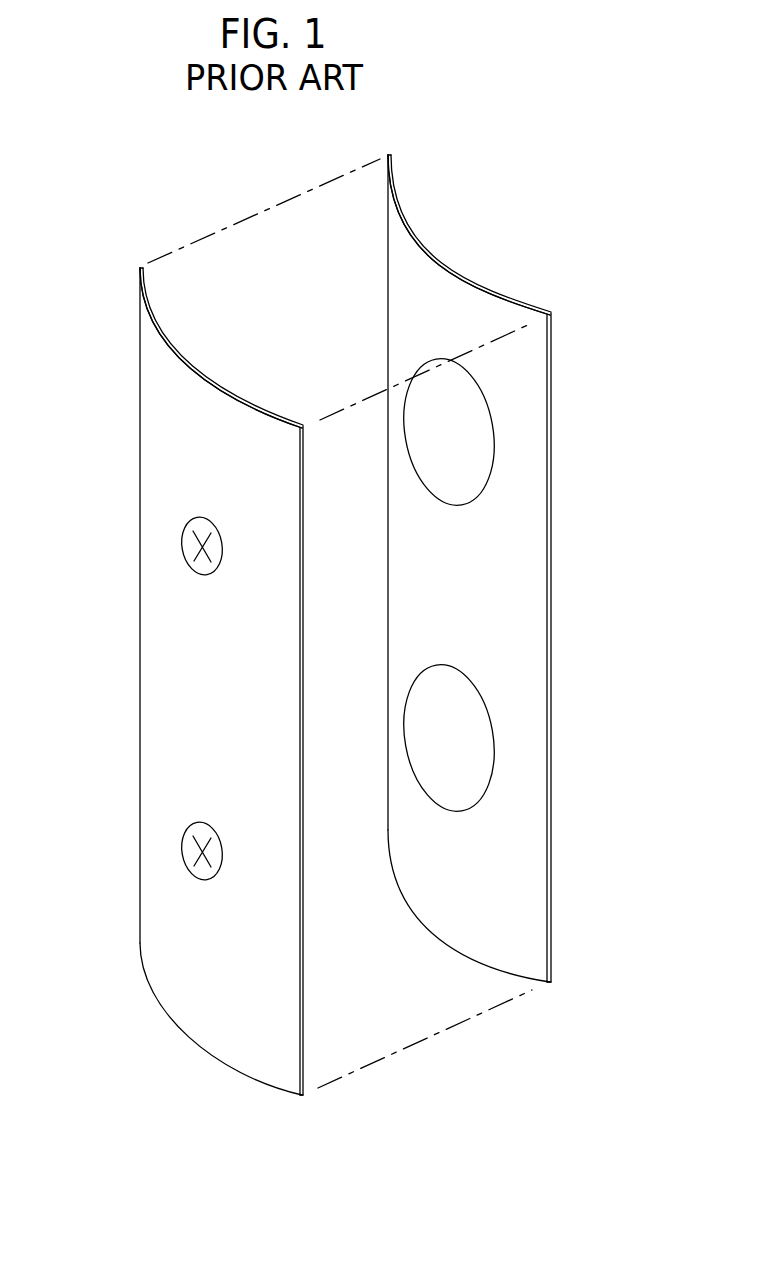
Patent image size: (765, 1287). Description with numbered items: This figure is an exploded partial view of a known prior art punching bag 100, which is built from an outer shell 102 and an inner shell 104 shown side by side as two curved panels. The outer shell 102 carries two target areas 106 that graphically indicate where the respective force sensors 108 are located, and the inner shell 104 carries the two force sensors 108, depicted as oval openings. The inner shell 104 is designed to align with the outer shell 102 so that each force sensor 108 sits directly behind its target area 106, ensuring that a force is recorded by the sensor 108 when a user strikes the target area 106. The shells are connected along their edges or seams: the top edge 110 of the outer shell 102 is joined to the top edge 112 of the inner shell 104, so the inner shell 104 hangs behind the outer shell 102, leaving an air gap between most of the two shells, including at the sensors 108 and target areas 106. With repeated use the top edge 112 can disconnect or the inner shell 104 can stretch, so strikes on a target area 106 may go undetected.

The punching bag 100 is at (542, 165).
The outer shell 102 is at (140, 692).
The inner shell 104 is at (551, 648).
The target areas 106 is at (198, 576).
The force sensors 108 is at (445, 507).
The top edge of the outer shell 110 is at (189, 366).
The top edge of the inner shell 112 is at (448, 265).